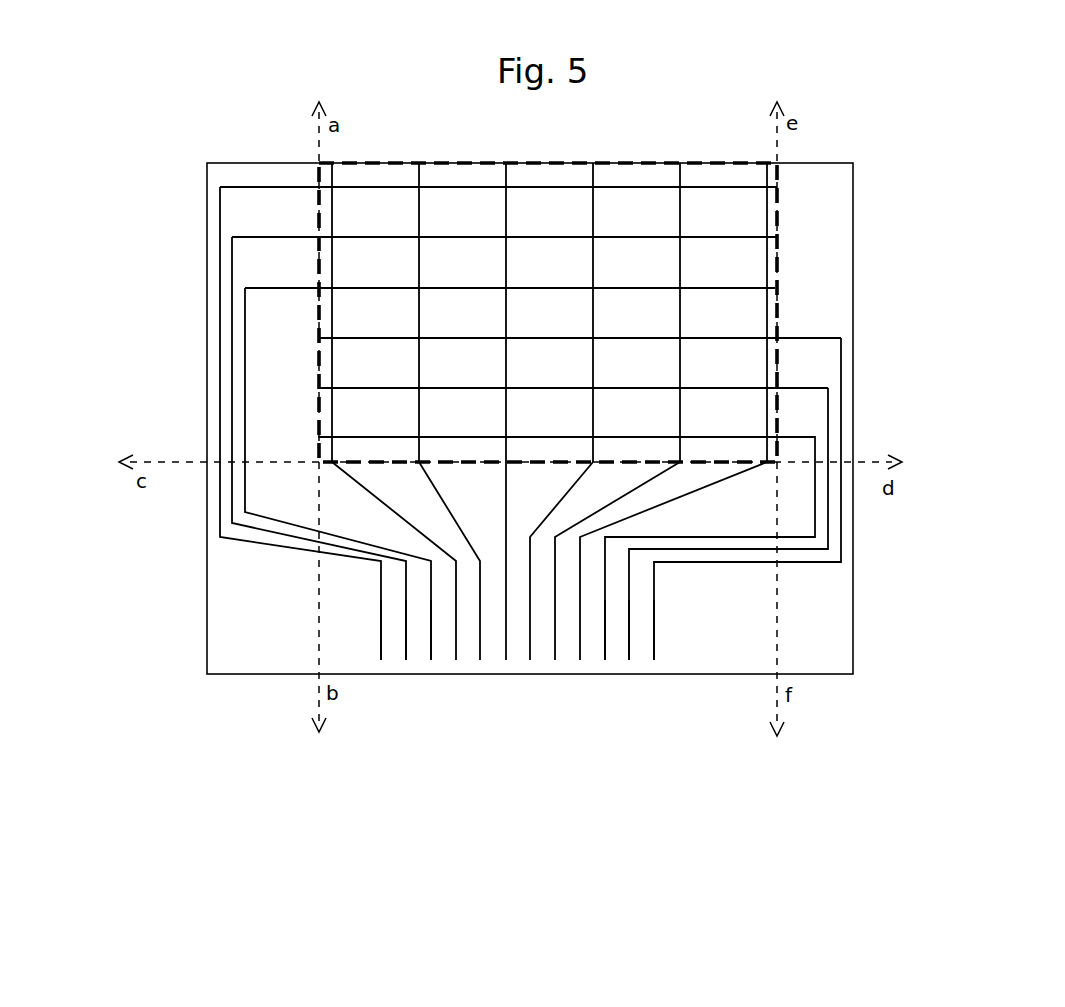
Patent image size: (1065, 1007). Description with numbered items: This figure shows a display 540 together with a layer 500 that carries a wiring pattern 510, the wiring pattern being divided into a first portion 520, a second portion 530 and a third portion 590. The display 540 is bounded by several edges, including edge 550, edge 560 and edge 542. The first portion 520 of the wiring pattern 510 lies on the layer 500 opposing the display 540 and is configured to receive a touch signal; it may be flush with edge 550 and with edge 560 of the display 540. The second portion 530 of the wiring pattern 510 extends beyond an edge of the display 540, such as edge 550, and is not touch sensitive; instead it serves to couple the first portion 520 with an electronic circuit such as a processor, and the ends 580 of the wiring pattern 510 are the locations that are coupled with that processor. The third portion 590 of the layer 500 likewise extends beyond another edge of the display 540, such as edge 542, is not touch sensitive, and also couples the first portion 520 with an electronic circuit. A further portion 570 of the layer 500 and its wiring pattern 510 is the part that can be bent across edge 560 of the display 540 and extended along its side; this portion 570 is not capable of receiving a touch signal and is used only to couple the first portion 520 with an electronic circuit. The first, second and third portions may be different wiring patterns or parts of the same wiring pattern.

The layer 500 is at (853, 642).
The wiring pattern 510 is at (695, 492).
The first portion 520 is at (682, 218).
The second portion 530 is at (257, 236).
The display 540 is at (779, 252).
The edge 542 is at (777, 289).
The edge 550 is at (317, 257).
The edge 560 is at (523, 466).
The portion 570 is at (362, 563).
The ends 580 is at (629, 659).
The third portion 590 is at (803, 383).